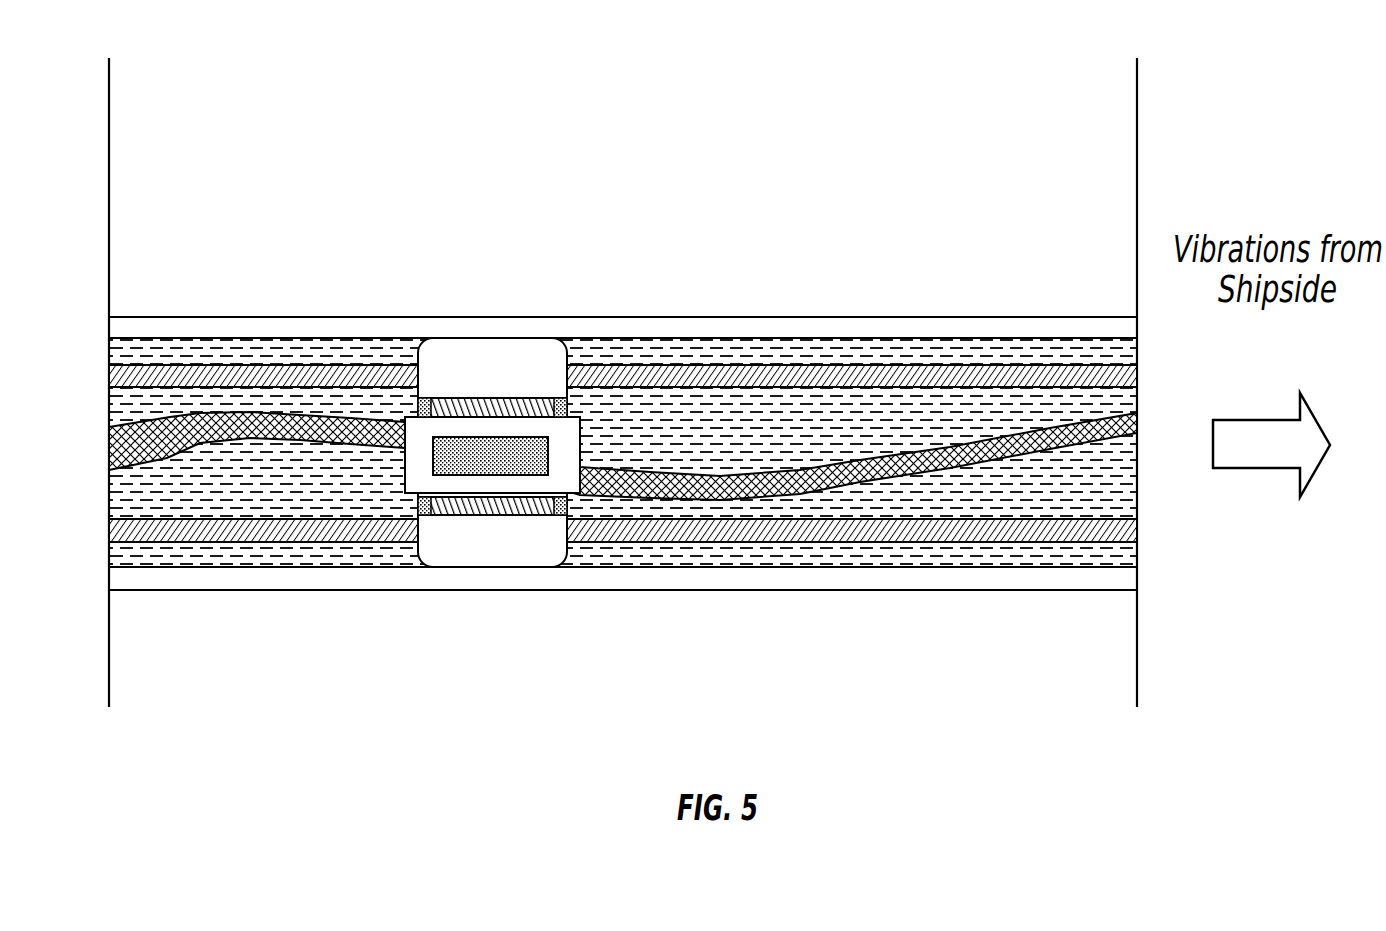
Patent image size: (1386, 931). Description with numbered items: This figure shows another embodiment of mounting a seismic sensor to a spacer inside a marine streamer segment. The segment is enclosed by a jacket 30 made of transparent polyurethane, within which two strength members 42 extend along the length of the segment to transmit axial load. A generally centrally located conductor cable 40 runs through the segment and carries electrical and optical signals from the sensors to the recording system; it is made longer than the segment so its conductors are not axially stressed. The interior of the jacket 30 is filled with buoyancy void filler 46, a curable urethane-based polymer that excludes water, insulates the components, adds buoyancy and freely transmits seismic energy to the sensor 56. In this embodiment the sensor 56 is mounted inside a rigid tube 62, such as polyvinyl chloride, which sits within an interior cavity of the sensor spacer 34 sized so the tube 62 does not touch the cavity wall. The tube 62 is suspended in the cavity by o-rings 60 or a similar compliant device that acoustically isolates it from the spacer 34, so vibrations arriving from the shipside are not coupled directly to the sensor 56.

The jacket 30 is at (300, 317).
The sensor spacer 34 is at (492, 543).
The conductor cable 40 is at (937, 458).
The strength members 42 is at (203, 365).
The buoyancy void filler 46 is at (1052, 507).
The sensor 56 is at (516, 437).
The o-rings 60 is at (562, 512).
The rigid tube 62 is at (468, 397).